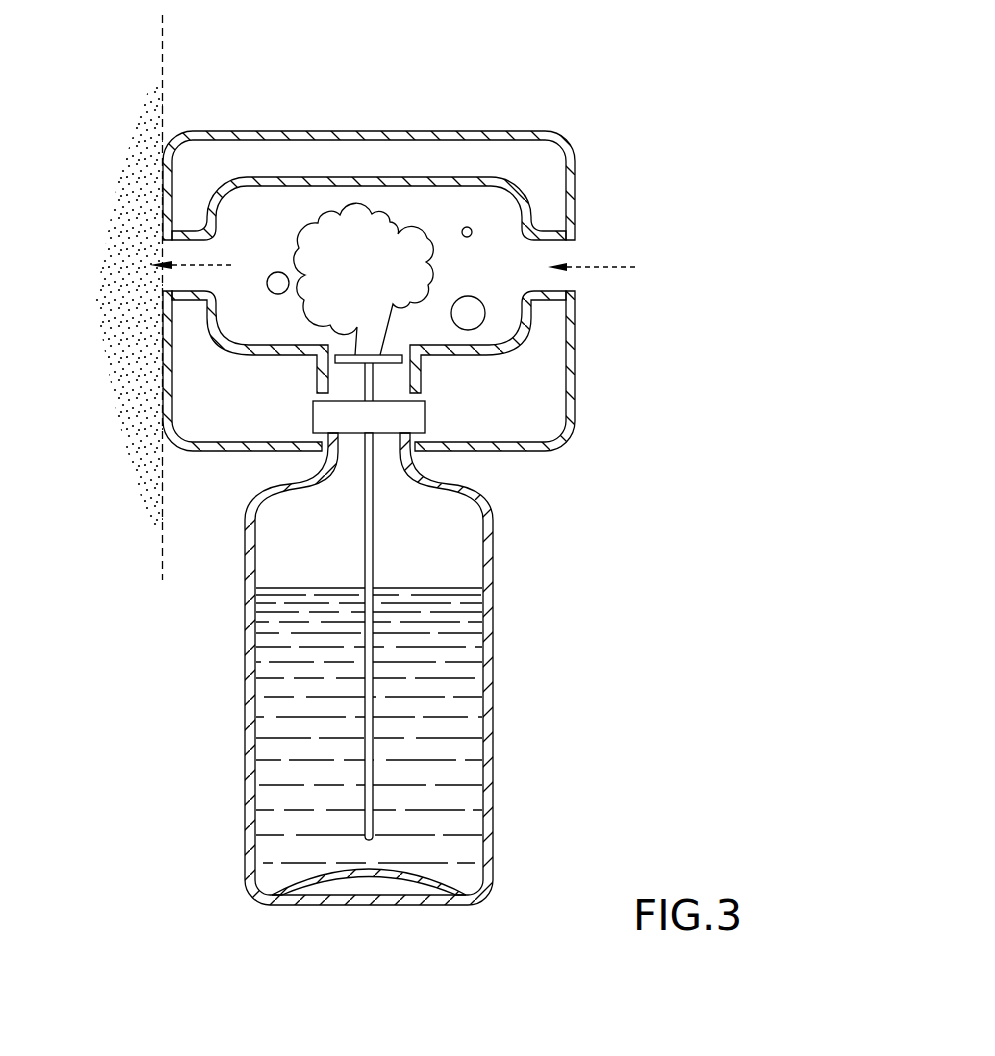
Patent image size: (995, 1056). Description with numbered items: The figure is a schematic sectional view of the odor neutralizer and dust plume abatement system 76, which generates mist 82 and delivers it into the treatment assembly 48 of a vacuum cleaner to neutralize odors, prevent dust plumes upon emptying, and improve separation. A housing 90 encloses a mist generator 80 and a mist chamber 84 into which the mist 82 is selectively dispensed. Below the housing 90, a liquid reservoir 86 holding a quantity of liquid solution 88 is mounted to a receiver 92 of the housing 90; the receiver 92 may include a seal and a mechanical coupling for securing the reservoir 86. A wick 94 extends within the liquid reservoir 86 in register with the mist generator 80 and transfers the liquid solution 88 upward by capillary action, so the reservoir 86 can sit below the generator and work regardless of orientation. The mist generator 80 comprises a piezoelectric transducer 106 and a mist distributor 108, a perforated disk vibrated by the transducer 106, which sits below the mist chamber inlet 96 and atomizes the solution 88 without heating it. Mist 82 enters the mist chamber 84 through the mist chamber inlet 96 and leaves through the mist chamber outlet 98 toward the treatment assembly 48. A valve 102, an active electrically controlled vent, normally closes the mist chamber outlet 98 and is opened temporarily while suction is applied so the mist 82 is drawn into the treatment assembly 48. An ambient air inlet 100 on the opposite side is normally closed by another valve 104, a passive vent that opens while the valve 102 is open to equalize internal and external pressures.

The odor neutralizer and dust plume abatement system 76 is at (667, 32).
The treatment assembly 48 is at (150, 413).
The mist generator 80 is at (370, 272).
The mist 82 is at (368, 209).
The mist chamber 84 is at (251, 208).
The liquid reservoir 86 is at (240, 777).
The liquid solution 88 is at (473, 728).
The housing 90 is at (503, 132).
The receiver 92 is at (313, 424).
The wick 94 is at (384, 801).
The mist chamber inlet 96 is at (333, 352).
The mist chamber outlet 98 is at (183, 250).
The ambient air inlet 100 is at (552, 253).
The valve 102 is at (158, 246).
The valve 104 is at (584, 253).
The piezoelectric transducer 106 is at (408, 361).
The mist distributor 108 is at (390, 353).